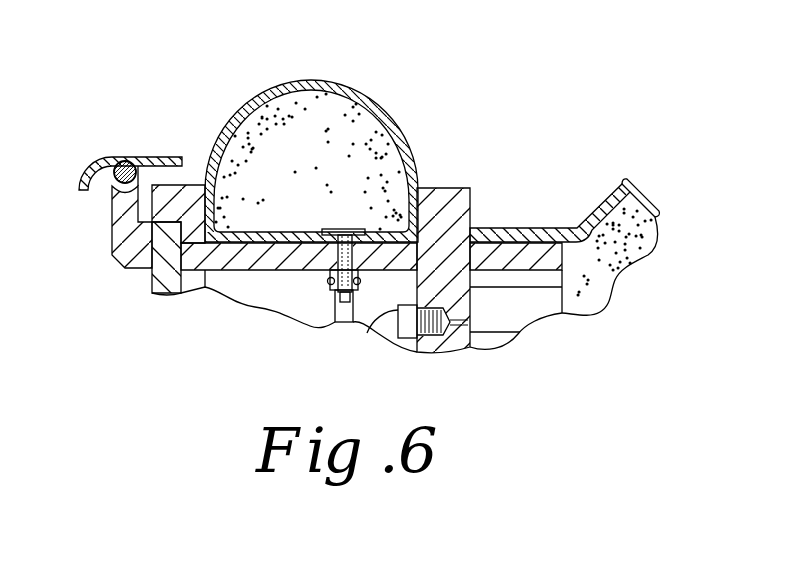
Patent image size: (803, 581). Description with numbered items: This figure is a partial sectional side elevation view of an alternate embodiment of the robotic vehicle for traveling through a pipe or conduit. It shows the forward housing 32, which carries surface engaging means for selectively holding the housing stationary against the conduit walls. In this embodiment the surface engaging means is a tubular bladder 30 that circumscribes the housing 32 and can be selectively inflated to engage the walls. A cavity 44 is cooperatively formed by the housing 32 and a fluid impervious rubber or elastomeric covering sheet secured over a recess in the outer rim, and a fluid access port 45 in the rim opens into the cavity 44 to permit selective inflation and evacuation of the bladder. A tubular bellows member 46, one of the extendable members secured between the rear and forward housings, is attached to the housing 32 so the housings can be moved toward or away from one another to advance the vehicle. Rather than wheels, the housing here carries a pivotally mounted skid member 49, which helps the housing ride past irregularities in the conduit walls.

The tubular bladder 30 is at (343, 83).
The forward housing 32 is at (440, 186).
The cavity 44 is at (294, 181).
The fluid access port 45 is at (335, 305).
The tubular bellows member 46 is at (597, 210).
The pivotally mounted skid member 49 is at (128, 155).